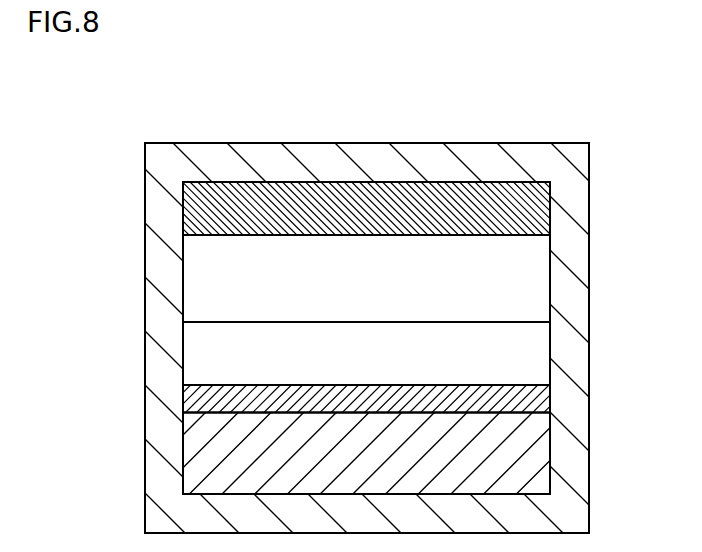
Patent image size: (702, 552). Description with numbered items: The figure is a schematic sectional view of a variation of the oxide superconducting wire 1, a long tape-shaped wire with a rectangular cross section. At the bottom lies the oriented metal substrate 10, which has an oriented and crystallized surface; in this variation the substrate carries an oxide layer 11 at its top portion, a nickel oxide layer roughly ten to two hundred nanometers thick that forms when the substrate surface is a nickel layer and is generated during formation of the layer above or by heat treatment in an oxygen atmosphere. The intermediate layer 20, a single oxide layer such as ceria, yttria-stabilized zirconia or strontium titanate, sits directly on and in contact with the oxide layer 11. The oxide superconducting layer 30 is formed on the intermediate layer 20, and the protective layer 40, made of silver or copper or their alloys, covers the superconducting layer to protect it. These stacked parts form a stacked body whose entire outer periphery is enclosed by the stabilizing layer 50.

The oxide superconducting wire 1 is at (140, 97).
The oriented metal substrate 10 is at (529, 450).
The oxide layer 11 is at (535, 398).
The intermediate layer 20 is at (529, 361).
The oxide superconducting layer 30 is at (528, 279).
The protective layer 40 is at (530, 208).
The stabilizing layer 50 is at (530, 164).